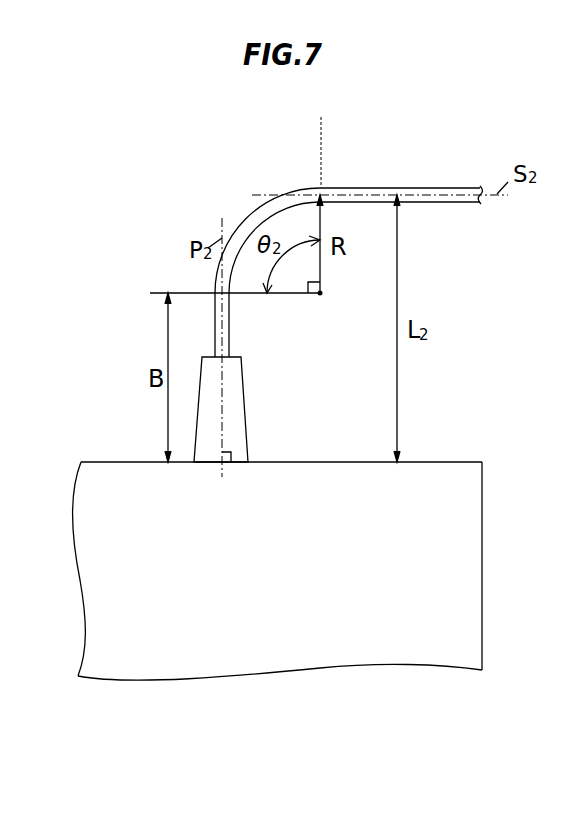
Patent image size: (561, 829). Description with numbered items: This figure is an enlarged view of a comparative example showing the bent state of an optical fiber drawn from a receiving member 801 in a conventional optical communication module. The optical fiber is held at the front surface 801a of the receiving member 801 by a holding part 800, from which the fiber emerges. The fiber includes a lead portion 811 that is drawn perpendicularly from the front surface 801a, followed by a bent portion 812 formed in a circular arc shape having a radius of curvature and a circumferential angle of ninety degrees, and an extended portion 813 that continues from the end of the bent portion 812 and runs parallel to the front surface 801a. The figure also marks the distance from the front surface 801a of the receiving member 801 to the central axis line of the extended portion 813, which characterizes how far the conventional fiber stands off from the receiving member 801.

The ferrule / tube holder 800 is at (207, 452).
The receiving member 801 is at (412, 683).
The front surface 801a is at (302, 460).
The lead portion 811 is at (138, 295).
The bent portion 812 is at (318, 113).
The extended portion 813 is at (482, 115).